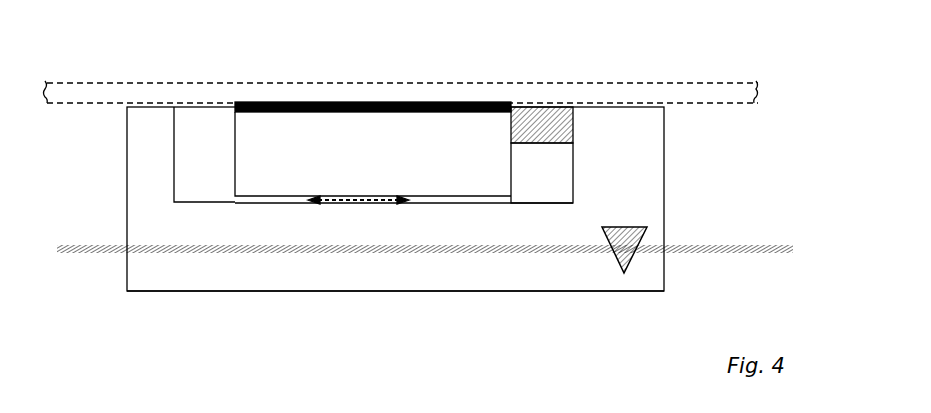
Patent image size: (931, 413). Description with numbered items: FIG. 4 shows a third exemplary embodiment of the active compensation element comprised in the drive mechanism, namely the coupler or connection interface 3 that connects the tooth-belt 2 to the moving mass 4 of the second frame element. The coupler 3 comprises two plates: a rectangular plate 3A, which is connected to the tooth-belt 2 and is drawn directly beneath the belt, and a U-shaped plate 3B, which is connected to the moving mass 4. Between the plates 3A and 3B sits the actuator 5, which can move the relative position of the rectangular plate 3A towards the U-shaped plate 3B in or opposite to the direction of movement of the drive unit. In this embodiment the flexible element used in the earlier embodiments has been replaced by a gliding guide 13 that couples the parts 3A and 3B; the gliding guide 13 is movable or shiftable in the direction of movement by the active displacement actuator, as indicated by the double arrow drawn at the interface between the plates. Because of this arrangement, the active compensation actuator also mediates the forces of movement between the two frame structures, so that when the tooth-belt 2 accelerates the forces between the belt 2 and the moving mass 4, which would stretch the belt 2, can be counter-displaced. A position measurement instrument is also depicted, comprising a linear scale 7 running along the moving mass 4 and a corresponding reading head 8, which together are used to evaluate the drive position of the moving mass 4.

The tooth-belt 2 is at (401, 62).
The coupler or connection interface 3 is at (465, 199).
The rectangular plate 3A is at (404, 112).
The U-shaped plate 3B is at (305, 248).
The moving mass 4 is at (395, 340).
The actuator 5 is at (478, 112).
The linear scale 7 is at (425, 317).
The reading head 8 is at (585, 308).
The gliding guide 13 is at (304, 293).